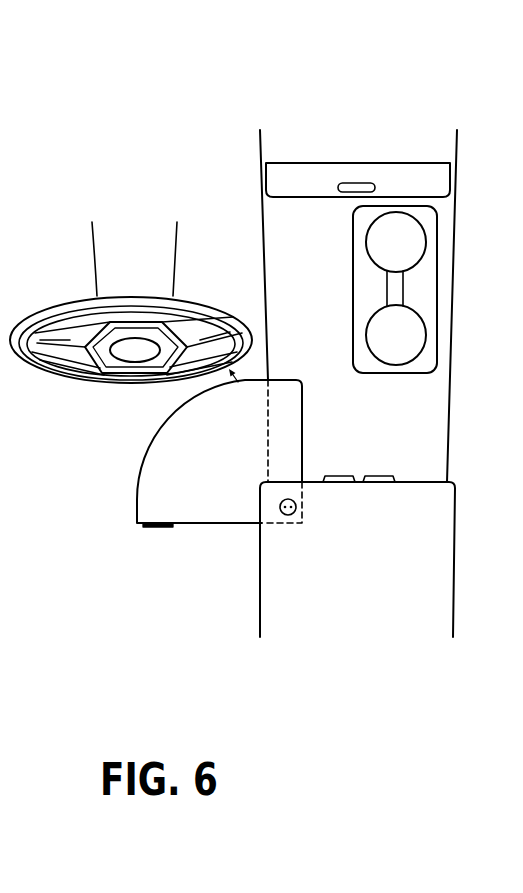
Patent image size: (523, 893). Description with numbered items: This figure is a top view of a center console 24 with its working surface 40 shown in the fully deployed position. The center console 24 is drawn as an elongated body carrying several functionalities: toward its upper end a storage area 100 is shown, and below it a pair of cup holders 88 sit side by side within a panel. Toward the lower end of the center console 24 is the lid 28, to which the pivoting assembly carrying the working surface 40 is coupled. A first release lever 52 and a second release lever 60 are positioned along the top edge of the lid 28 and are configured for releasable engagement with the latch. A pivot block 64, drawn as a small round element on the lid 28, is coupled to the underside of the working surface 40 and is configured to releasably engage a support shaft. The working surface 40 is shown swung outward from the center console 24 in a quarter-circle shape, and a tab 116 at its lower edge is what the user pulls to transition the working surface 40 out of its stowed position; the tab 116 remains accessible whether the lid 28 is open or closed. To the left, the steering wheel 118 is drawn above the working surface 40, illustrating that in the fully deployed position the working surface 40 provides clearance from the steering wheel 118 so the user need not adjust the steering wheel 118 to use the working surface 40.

The center console 24 is at (270, 98).
The storage area 100 is at (440, 177).
The cup holder 88 is at (392, 322).
The steering wheel 118 is at (128, 297).
The working surface 40 is at (187, 484).
The tab 116 is at (152, 528).
The pivot block 64 is at (282, 523).
The second release lever 60 is at (338, 472).
The first release lever 52 is at (378, 472).
The lid 28 is at (440, 580).